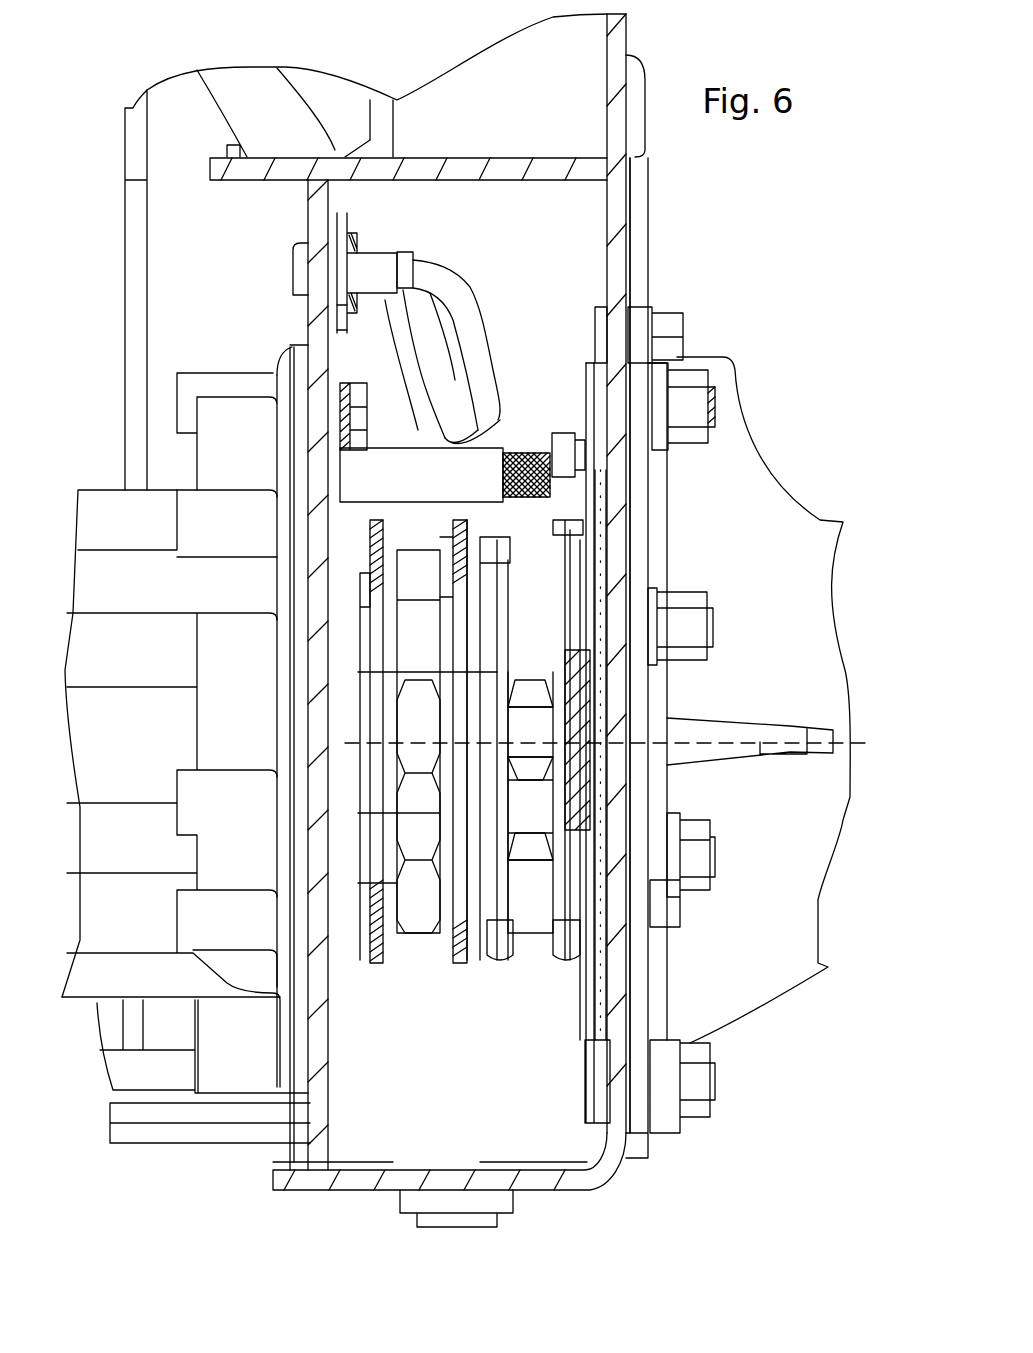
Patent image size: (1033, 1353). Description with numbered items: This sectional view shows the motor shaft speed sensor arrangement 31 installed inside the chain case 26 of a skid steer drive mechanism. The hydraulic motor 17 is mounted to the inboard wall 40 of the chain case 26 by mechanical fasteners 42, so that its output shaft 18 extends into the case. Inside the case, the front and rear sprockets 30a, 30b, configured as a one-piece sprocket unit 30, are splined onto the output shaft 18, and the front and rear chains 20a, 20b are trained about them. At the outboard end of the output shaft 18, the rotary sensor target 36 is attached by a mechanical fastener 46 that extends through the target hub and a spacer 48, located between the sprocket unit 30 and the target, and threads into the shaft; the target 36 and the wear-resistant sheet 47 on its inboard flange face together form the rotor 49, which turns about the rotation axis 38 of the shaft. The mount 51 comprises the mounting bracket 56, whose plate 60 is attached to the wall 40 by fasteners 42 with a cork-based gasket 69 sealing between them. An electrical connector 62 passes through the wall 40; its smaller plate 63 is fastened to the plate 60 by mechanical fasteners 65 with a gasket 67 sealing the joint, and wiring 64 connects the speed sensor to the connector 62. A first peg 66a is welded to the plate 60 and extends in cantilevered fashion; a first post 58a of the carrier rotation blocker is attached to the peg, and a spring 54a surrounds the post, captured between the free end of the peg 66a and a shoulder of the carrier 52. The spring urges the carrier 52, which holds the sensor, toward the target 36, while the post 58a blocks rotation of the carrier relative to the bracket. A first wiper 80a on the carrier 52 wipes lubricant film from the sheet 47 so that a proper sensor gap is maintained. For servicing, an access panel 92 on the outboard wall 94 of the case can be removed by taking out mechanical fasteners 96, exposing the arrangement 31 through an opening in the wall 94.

The hydraulic motor 17 is at (103, 497).
The output shaft 18 is at (460, 670).
The front chain 20a is at (380, 963).
The rear chain 20b is at (570, 960).
The chain case 26 is at (333, 152).
The sprocket unit 30 is at (540, 1012).
The front sprocket 30a is at (430, 947).
The rear sprocket 30b is at (533, 955).
The motor shaft speed sensor arrangement 31 is at (530, 208).
The sensor target 36 is at (638, 547).
The rotation axis 38 is at (762, 750).
The inboard wall 40 is at (307, 220).
The mechanical fasteners 42 is at (373, 413).
The mechanical fastener 46 is at (623, 687).
The wear-resistant sheet 47 is at (603, 545).
The spacer 48 is at (617, 630).
The rotor 49 is at (618, 490).
The mount 51 is at (440, 517).
The carrier 52 is at (562, 410).
The spring 54a is at (513, 440).
The mounting bracket 56 is at (358, 512).
The first post 58a is at (577, 510).
The plate 60 is at (347, 348).
The electrical connector 62 is at (397, 240).
The smaller plate 63 is at (347, 230).
The wiring 64 is at (455, 262).
The mechanical fasteners 65 is at (362, 228).
The first peg 66a is at (372, 483).
The gasket 67 is at (332, 330).
The gasket 69 is at (330, 305).
The first wiper 80a is at (643, 575).
The access panel 92 is at (643, 393).
The outboard wall 94 is at (623, 273).
The mechanical fasteners 96 is at (677, 313).